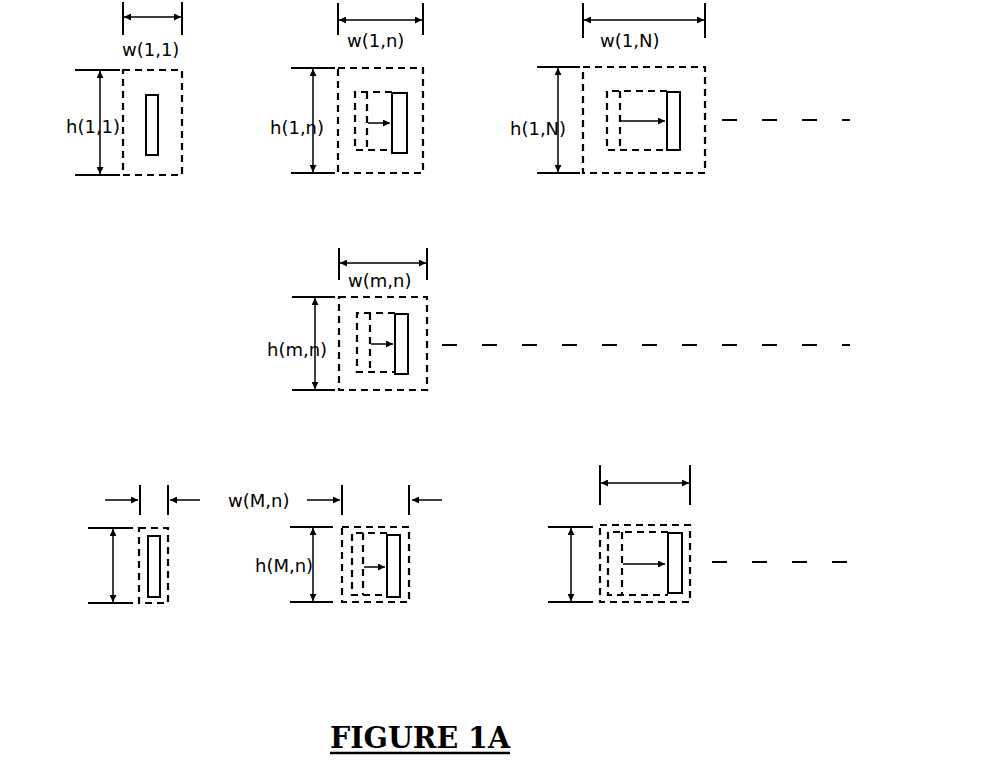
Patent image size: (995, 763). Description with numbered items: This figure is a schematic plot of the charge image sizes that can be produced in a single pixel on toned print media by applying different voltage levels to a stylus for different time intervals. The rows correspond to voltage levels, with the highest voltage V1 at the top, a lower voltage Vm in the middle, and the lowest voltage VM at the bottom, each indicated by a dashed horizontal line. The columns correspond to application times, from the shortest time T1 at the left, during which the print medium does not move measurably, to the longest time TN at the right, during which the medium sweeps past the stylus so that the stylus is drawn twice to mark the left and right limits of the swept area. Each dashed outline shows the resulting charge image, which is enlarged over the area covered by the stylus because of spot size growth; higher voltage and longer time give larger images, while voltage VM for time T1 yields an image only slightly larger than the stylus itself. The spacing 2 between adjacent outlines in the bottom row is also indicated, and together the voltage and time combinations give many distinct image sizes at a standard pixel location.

The gap between pixel regions 2 is at (375, 500).
The voltage V1 is at (804, 126).
The voltage Vm is at (666, 350).
The voltage VM is at (802, 571).
The time T1 is at (144, 589).
The time TN is at (662, 590).